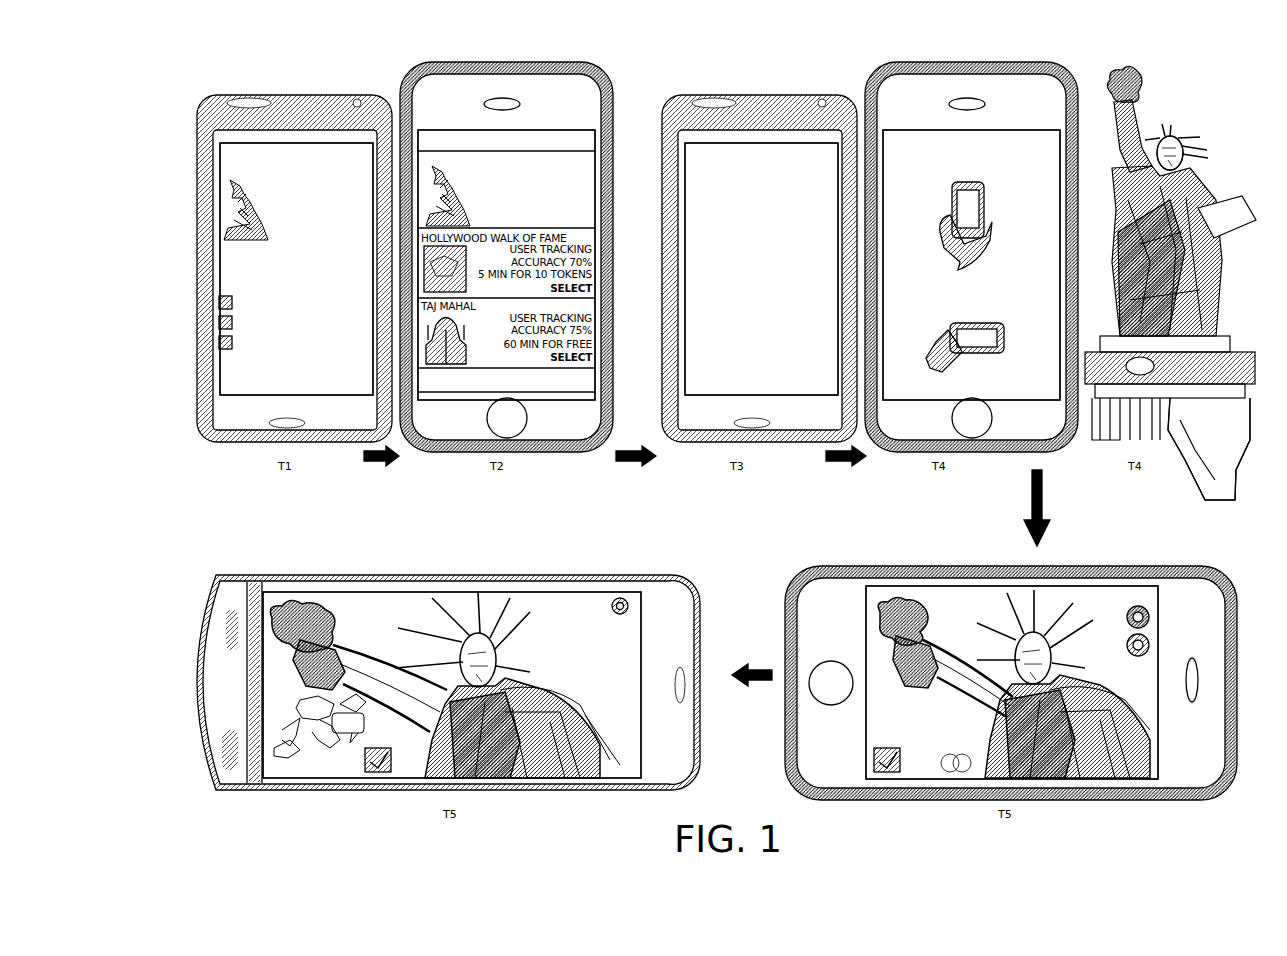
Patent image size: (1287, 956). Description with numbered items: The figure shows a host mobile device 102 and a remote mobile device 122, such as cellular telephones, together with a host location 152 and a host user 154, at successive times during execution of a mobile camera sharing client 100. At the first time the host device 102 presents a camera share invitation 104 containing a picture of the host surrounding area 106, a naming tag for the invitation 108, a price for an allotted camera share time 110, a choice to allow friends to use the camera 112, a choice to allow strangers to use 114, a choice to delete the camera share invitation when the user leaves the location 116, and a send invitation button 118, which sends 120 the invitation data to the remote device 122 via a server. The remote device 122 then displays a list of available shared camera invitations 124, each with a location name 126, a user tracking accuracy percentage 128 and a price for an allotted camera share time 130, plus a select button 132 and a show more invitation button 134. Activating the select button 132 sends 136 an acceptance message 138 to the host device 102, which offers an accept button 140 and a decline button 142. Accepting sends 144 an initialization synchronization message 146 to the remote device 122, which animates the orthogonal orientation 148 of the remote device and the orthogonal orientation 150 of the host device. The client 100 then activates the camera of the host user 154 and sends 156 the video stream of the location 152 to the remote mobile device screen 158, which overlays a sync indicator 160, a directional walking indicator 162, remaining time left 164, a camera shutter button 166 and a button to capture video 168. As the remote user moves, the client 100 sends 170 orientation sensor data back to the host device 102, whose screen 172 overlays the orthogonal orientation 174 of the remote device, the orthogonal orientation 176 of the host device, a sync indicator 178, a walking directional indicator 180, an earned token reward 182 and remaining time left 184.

The mobile camera sharing client 100 is at (308, 56).
The host mobile device 102 is at (227, 94).
The camera share invitation 104 is at (222, 148).
The picture of the host surrounding area 106 is at (217, 217).
The naming tag for the invitation 108 is at (217, 246).
The price for an allotted camera share time 110 is at (217, 271).
The choice to allow friends to use the camera 112 is at (217, 301).
The choice to allow strangers to use 114 is at (217, 325).
The choice to delete the camera share invitation when the user leaves the location 116 is at (217, 349).
The send invitation button 118 is at (230, 394).
The sending of invitation data 120 is at (381, 468).
The remote mobile device 122 is at (433, 64).
The list of available shared camera invitations 124 is at (570, 130).
The location name 126 is at (558, 158).
The user tracking accuracy percentage 128 is at (598, 177).
The price for an allotted camera share time 130 is at (598, 202).
The select button 132 is at (598, 219).
The show more invitation button 134 is at (586, 381).
The sending of acceptance message 136 is at (636, 468).
The acceptance message 138 is at (808, 150).
The accept button 140 is at (710, 286).
The decline button 142 is at (800, 286).
The sending of initialization synchronization message 144 is at (844, 468).
The initialization synchronization message 146 is at (1046, 130).
The orthogonal orientation of remote mobile device 148 is at (996, 235).
The orthogonal orientation of host mobile device 150 is at (985, 358).
The host location 152 is at (1200, 130).
The host user 154 is at (1193, 428).
The sending of video stream 156 is at (1046, 508).
The remote mobile device screen 158 is at (980, 580).
The sync indicator with host user tracking accuracy percentage 160 is at (910, 745).
The directional walking indicator 162 is at (962, 752).
The remaining time left of camera share 164 is at (1160, 590).
The camera shutter button 166 is at (1160, 615).
The button to capture video 168 is at (1160, 647).
The sending of orientation sensor data 170 is at (752, 685).
The camera view display screen 172 is at (478, 590).
The orthogonal orientation of remote mobile device 174 is at (314, 694).
The orthogonal orientation of host mobile device 176 is at (355, 744).
The sync indicator with host user tracking accuracy percentage 178 is at (396, 760).
The walking directional indicator 180 is at (632, 594).
The earned token reward 182 is at (643, 618).
The remaining time left of camera share 184 is at (643, 640).